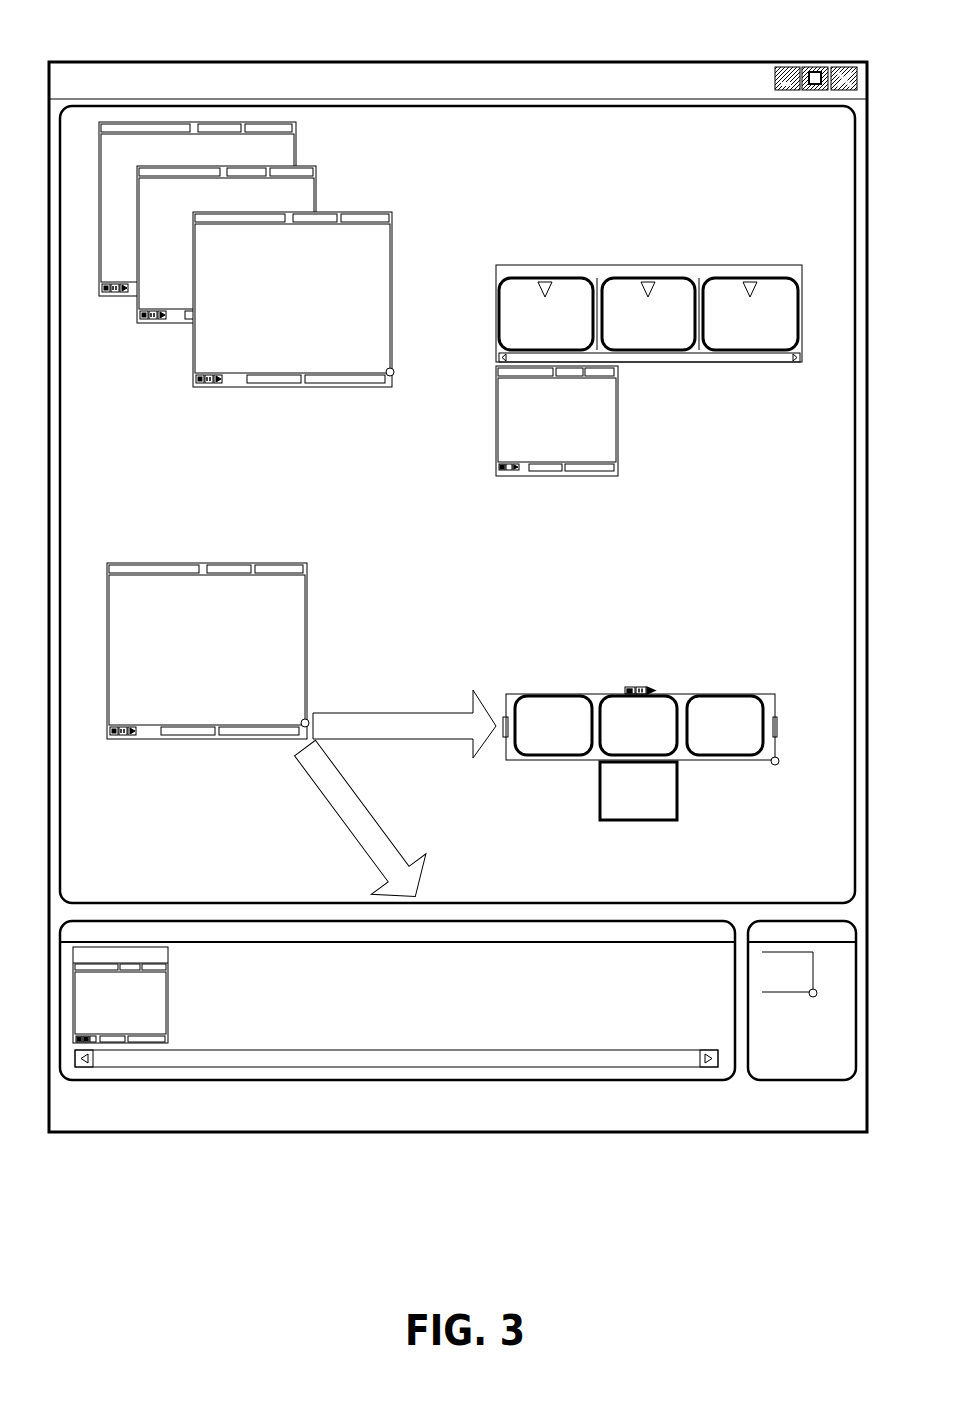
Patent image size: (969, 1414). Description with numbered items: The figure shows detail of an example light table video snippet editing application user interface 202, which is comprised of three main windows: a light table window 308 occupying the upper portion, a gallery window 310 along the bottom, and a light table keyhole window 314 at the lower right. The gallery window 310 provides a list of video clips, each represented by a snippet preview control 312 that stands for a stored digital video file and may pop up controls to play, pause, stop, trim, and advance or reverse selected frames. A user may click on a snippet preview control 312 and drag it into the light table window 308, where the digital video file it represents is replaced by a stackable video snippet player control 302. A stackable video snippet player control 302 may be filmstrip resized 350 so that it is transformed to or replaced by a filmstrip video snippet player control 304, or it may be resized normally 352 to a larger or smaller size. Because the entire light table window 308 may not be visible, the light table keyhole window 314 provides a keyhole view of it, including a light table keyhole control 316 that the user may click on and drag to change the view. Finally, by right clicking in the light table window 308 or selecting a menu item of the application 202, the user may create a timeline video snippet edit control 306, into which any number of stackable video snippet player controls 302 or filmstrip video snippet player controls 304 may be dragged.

The light table video snippet editing application user interface 202 is at (645, 23).
The stackable video snippet player control 302 is at (305, 640).
The filmstrip video snippet player control 304 is at (750, 655).
The timeline video snippet edit control 306 is at (740, 403).
The light table window 308 is at (840, 891).
The gallery window 310 is at (722, 1043).
The snippet preview control 312 is at (112, 1025).
The light table keyhole window 314 is at (785, 1080).
The light table keyhole control 316 is at (805, 977).
The filmstrip resize 350 is at (487, 734).
The normal resize 352 is at (360, 822).